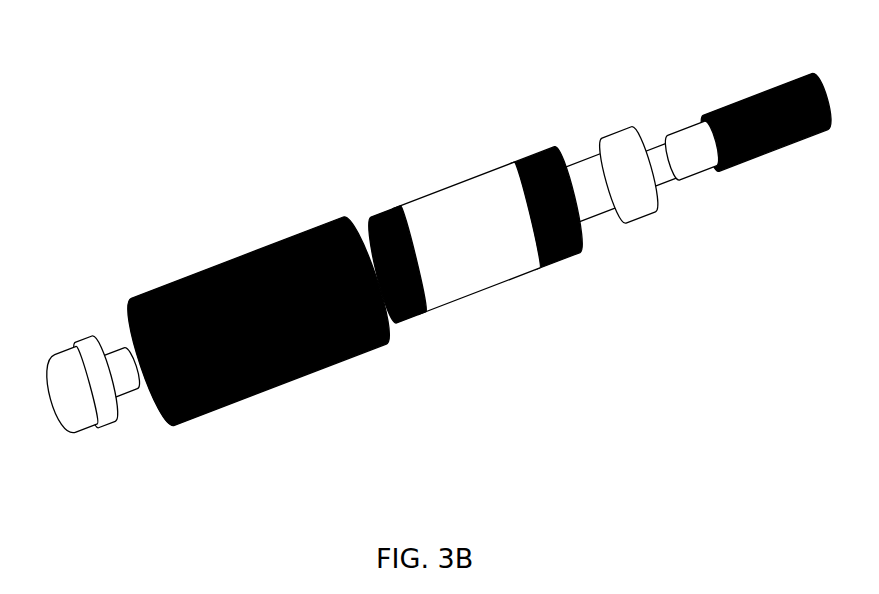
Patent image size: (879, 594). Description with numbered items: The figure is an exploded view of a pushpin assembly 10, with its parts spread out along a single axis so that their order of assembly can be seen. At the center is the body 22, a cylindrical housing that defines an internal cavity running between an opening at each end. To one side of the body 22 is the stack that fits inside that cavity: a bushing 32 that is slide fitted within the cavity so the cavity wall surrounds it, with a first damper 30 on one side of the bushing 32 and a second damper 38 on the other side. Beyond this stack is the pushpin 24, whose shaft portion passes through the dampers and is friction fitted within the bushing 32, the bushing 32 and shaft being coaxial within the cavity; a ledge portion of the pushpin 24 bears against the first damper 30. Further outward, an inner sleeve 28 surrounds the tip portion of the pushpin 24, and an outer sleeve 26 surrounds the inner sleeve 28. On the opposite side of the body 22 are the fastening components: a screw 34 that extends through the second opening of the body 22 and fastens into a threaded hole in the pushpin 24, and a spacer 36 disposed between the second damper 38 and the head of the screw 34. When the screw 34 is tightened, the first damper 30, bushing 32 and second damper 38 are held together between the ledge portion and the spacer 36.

The pushpin assembly 10 is at (158, 64).
The body 22 is at (210, 273).
The pushpin 24 is at (620, 140).
The outer sleeve 26 is at (787, 100).
The inner sleeve 28 is at (683, 135).
The first damper 30 is at (557, 238).
The bushing 32 is at (450, 200).
The screw 34 is at (113, 377).
The spacer 36 is at (78, 337).
The second damper 38 is at (400, 293).